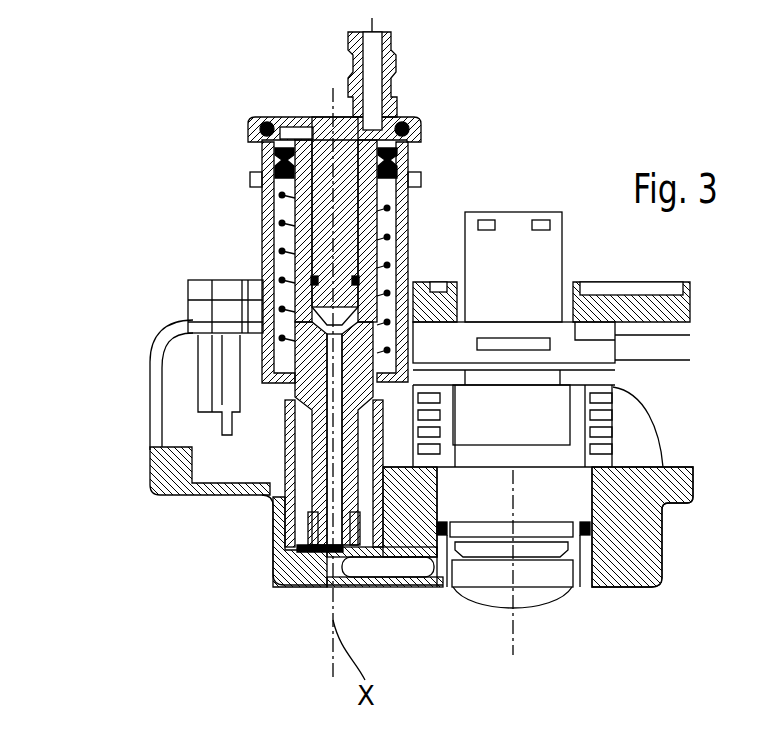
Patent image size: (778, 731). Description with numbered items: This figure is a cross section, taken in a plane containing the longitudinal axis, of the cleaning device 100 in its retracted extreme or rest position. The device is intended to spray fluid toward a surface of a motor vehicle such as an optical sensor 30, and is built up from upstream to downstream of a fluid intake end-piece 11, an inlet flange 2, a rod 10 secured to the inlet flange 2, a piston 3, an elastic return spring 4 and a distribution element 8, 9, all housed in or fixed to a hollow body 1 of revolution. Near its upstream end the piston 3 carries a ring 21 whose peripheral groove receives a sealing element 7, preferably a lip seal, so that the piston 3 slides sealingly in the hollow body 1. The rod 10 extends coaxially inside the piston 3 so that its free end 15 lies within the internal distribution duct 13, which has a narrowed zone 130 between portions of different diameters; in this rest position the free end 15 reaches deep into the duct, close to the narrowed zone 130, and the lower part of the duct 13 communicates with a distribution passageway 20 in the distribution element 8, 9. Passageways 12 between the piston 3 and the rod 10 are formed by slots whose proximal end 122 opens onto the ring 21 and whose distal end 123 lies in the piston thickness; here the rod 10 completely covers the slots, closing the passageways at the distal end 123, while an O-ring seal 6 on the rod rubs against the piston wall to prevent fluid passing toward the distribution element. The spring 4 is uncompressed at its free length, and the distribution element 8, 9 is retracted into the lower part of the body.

The cleaning device 100 is at (143, 120).
The hollow body 1 is at (265, 266).
The inlet flange 2 is at (252, 122).
The piston 3 is at (307, 357).
The spring 4 is at (275, 230).
The O-ring seal 6 is at (305, 284).
The sealing element 7 is at (276, 160).
The upstream portion of the distribution element 8 is at (310, 587).
The distribution element 9 is at (292, 628).
The rod 10 is at (252, 182).
The fluid intake end-piece 11 is at (383, 82).
The passageways 12 is at (308, 132).
The internal distribution duct 13 is at (333, 378).
The free end of the rod 15 is at (397, 290).
The distribution passageway 20 is at (400, 587).
The ring 21 is at (380, 160).
The optical sensor 30 is at (533, 608).
The proximal end of the slot 122 is at (368, 130).
The distal end of the slot 123 is at (358, 212).
The narrowed zone 130 is at (300, 356).